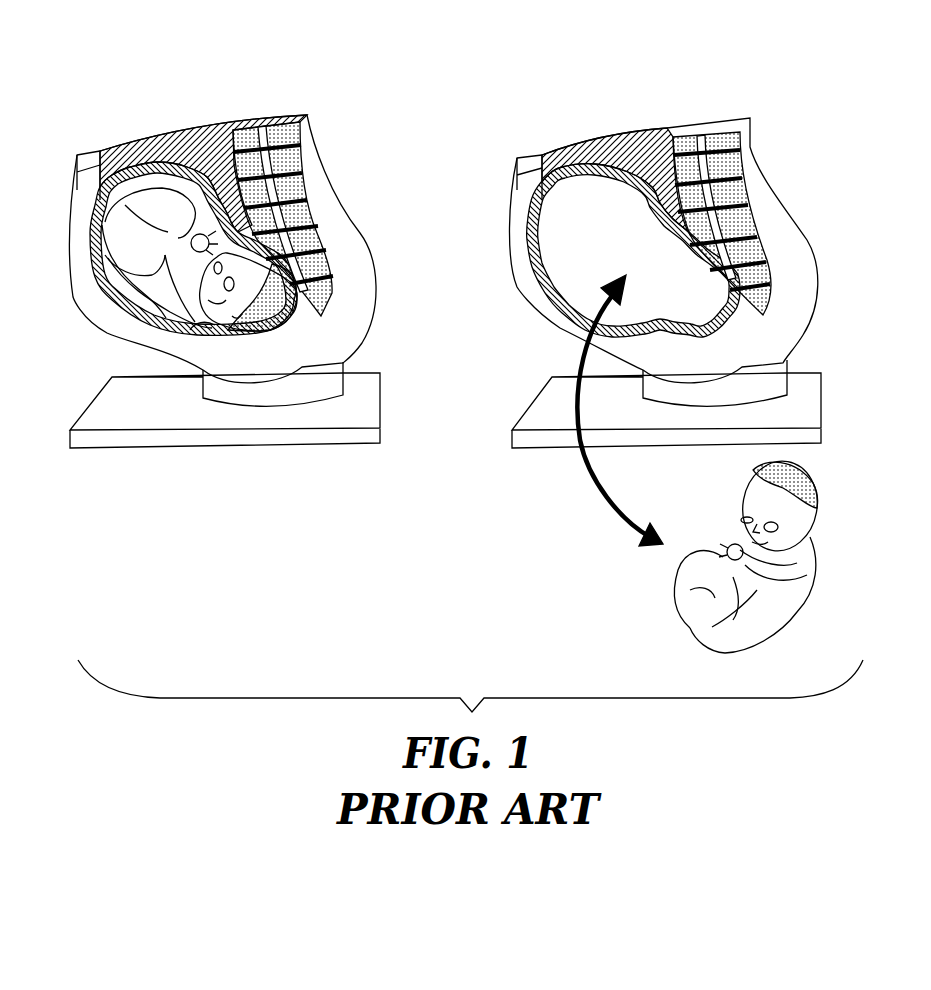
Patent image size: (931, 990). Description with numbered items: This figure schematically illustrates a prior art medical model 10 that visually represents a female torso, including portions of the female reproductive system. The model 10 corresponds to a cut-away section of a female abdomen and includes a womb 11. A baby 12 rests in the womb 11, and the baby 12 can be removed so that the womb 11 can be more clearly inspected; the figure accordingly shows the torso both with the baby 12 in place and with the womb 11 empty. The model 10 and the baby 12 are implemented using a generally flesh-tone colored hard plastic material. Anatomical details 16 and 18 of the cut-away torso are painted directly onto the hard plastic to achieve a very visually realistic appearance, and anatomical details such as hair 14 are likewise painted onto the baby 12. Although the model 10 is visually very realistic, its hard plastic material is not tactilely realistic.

The model 10 is at (337, 100).
The womb 11 is at (112, 203).
The baby 12 is at (135, 281).
The hair 14 is at (273, 310).
The anatomical detail 16 is at (192, 157).
The anatomical detail 18 is at (286, 211).